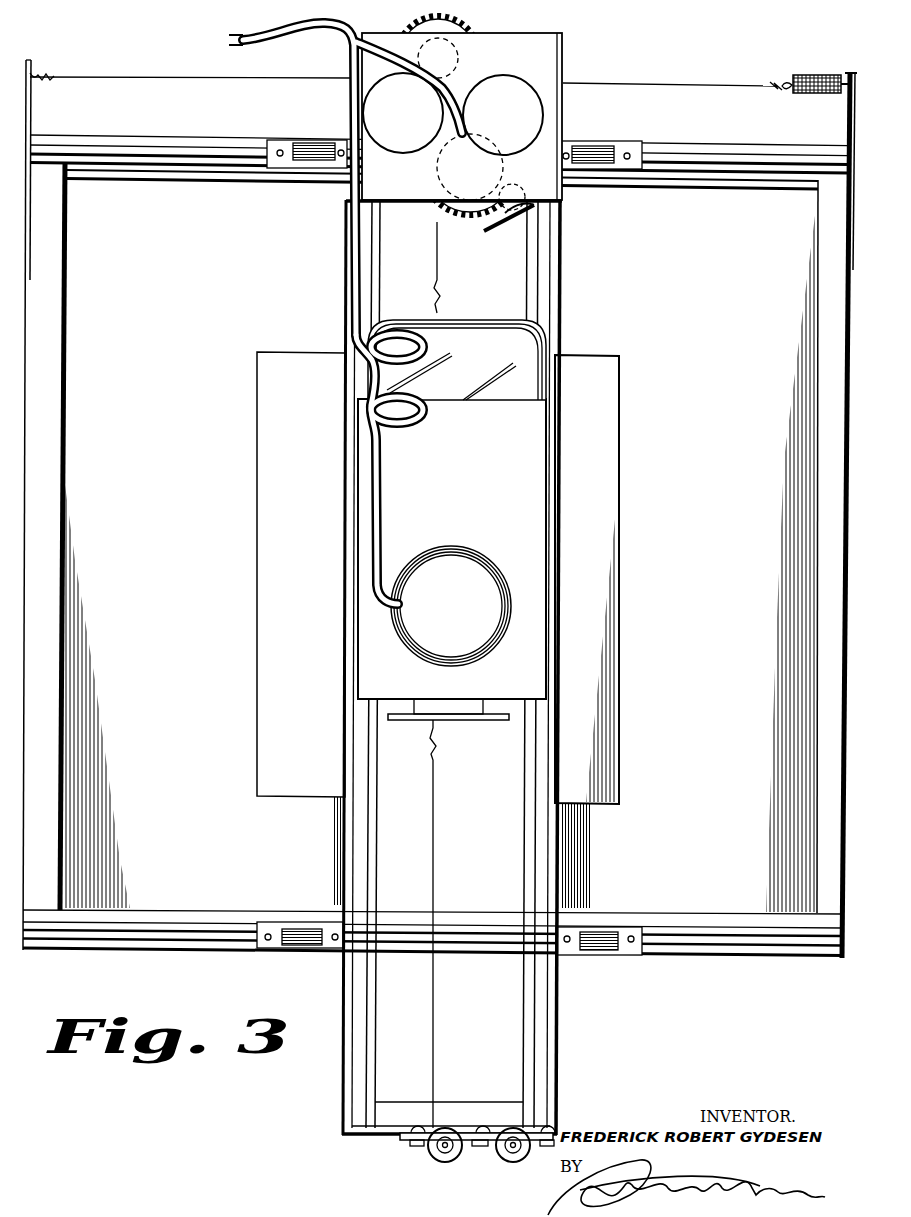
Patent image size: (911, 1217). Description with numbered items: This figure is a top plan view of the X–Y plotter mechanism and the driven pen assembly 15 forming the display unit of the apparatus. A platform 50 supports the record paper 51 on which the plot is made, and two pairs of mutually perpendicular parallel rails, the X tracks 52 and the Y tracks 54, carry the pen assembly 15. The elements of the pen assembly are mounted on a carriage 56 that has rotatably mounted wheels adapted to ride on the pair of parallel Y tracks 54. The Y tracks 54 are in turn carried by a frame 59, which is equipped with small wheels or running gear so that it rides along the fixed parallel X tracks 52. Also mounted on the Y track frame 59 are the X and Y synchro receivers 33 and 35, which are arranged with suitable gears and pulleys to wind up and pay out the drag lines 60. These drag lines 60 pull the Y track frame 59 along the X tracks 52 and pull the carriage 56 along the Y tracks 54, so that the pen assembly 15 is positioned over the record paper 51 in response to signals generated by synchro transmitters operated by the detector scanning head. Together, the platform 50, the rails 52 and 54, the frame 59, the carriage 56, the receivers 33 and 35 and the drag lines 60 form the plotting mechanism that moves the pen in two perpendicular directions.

The pen assembly 15 is at (562, 469).
The X synchro receiver 33 is at (397, 156).
The Y synchro receiver 35 is at (508, 155).
The platform 50 is at (742, 527).
The record paper 51 is at (590, 615).
The X tracks 52 is at (704, 164).
The Y tracks 54 is at (363, 1016).
The carriage 56 is at (470, 321).
The Y track frame 59 is at (566, 55).
The drag lines 60 is at (607, 87).